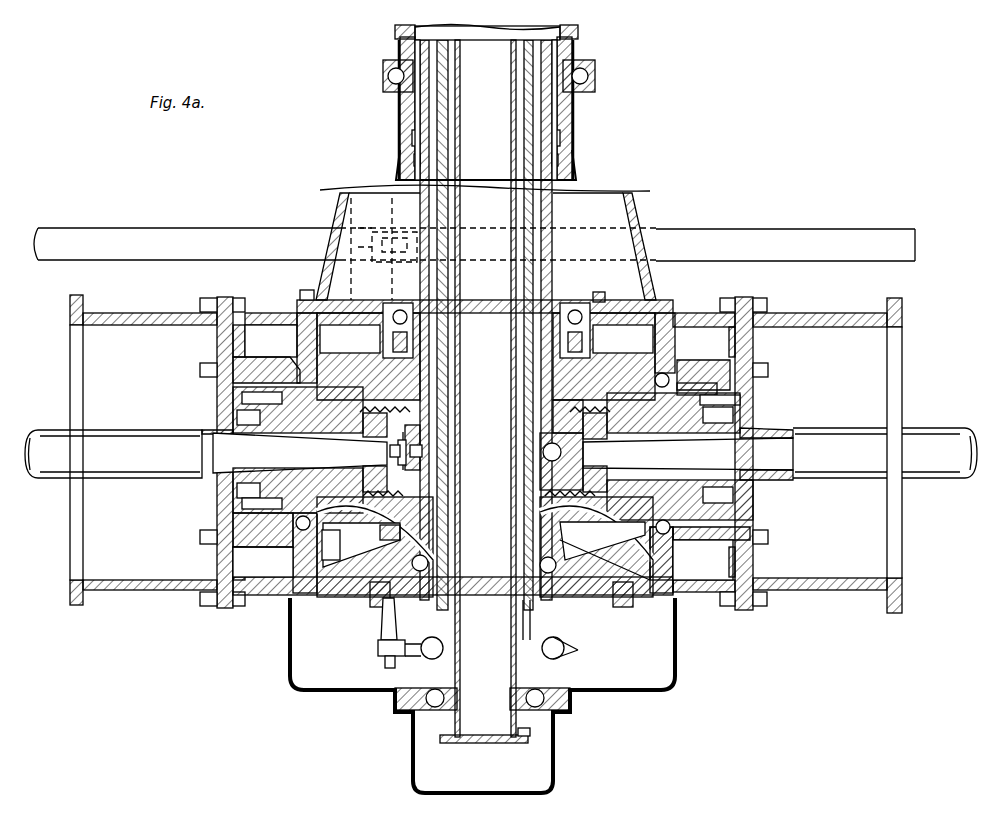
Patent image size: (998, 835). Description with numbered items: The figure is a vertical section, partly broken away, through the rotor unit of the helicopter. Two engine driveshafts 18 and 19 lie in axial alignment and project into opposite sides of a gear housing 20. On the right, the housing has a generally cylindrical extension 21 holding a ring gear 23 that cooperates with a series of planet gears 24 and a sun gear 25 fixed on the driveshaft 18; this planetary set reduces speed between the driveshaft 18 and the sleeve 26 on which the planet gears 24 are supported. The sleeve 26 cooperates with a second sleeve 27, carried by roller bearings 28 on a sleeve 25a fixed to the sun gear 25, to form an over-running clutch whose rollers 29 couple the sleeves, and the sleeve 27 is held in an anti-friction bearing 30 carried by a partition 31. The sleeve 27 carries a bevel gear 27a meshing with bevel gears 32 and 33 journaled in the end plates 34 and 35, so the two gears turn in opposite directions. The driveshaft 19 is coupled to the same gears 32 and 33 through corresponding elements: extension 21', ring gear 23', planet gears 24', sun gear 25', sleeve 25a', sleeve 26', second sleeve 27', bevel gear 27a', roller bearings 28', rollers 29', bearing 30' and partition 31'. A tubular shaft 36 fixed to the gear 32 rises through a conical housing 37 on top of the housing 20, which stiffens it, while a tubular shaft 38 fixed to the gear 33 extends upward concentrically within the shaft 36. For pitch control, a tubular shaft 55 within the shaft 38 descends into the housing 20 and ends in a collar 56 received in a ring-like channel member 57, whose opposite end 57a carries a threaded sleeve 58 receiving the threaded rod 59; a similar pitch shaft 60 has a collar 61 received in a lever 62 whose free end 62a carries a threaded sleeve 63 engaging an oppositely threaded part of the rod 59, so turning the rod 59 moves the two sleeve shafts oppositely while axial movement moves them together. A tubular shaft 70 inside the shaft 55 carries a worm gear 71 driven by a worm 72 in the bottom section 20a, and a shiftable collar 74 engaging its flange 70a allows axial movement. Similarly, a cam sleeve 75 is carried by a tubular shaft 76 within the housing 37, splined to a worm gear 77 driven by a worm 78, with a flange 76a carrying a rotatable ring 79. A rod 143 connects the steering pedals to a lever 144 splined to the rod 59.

The driveshaft 18 is at (940, 445).
The driveshaft 19 is at (50, 450).
The gear housing 20 is at (292, 296).
The bottom section of the casing 20a is at (572, 705).
The cylindrical extension 21 is at (827, 448).
The cylindrical extension 21' is at (143, 445).
The ring gear 23 is at (767, 445).
The ring gear 23' is at (200, 452).
The planet gears 24 is at (769, 452).
The planet gears 24' is at (202, 452).
The sun gear 25 is at (700, 415).
The sun gear 25' is at (264, 410).
The sleeve 25a is at (720, 463).
The sleeve 25a' is at (261, 490).
The sleeve 26 is at (641, 351).
The sleeve 26' is at (326, 351).
The second sleeve 27 is at (696, 363).
The second sleeve 27' is at (263, 537).
The bevel gear 27a is at (596, 427).
The bevel gear 27a' is at (380, 428).
The roller bearings 28 is at (688, 454).
The roller bearings 28' is at (342, 536).
The rollers 29 is at (691, 359).
The rollers 29' is at (300, 453).
The anti-friction bearing 30 is at (646, 550).
The anti-friction bearing 30' is at (348, 538).
The partition 31 is at (711, 553).
The partition 31' is at (333, 547).
The bevel gear 32 is at (607, 392).
The bevel gear 33 is at (612, 512).
The end plate 34 is at (612, 306).
The end plate 35 is at (615, 600).
The tubular shaft 36 is at (555, 214).
The conical housing 37 is at (345, 187).
The tubular shaft 38 is at (540, 480).
The tubular shaft or sleeve 55 is at (530, 622).
The collar 56 is at (566, 644).
The ring-like channel member 57 is at (560, 658).
The opposite end of the member 57a is at (380, 645).
The internally threaded sleeve 58 is at (384, 656).
The rod 59 is at (382, 612).
The pitch-varying sleeve and shaft 60 is at (430, 435).
The collar or flange 61 is at (432, 450).
The lever 62 is at (440, 468).
The free end of the lever 62a is at (392, 452).
The internally threaded sleeve 63 is at (440, 425).
The tubular shaft 70 is at (462, 603).
The flange 70a is at (505, 745).
The worm gear 71 is at (514, 699).
The worm 72 is at (432, 690).
The shiftable collar 74 is at (530, 735).
The cam sleeve 75 is at (405, 100).
The tubular shaft 76 is at (570, 62).
The flange 76a is at (400, 35).
The worm gear 77 is at (415, 60).
The worm 78 is at (385, 80).
The ring 79 is at (580, 32).
The link or rod 143 is at (165, 208).
The lever 144 is at (357, 217).